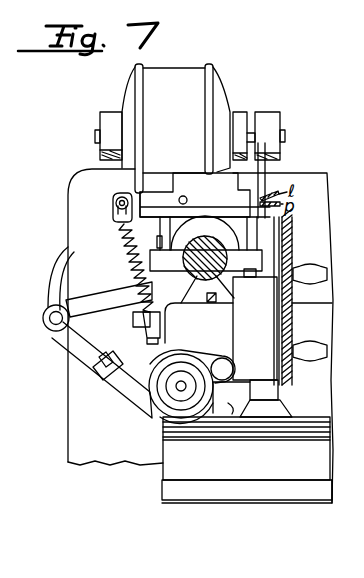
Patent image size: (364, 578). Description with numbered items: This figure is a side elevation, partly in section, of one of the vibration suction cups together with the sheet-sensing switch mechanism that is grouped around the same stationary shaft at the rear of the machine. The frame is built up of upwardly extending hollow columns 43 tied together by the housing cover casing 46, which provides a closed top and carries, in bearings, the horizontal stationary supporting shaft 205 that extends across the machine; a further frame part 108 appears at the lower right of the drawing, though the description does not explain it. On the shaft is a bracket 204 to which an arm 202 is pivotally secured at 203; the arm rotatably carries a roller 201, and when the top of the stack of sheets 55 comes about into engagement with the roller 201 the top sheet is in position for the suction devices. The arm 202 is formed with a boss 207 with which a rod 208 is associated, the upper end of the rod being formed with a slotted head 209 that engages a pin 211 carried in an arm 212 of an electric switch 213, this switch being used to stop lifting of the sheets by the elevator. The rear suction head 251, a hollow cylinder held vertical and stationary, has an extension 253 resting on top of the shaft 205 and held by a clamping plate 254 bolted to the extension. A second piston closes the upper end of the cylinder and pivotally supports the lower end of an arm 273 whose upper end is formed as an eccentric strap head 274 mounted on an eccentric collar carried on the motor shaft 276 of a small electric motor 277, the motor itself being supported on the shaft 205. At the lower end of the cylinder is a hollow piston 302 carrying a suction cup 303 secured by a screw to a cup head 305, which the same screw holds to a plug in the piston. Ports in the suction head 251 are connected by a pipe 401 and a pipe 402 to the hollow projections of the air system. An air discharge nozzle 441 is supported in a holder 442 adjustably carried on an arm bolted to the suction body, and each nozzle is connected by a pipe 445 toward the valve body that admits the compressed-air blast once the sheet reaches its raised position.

The hollow column 43 is at (115, 317).
The housing cover casing 46 is at (325, 205).
The stack of sheets 55 is at (283, 425).
The base frame 108 is at (358, 442).
The roller 201 is at (187, 412).
The arm 202 is at (166, 380).
The pivot 203 is at (52, 328).
The bracket 204 is at (109, 304).
The stationary supporting shaft 205 is at (224, 277).
The boss 207 is at (152, 322).
The rod 208 is at (128, 250).
The slotted head 209 is at (113, 208).
The pin 211 is at (121, 197).
The switch arm 212 is at (152, 193).
The electric switch 213 is at (195, 195).
The rear suction head 251 is at (255, 328).
The extension 253 is at (223, 246).
The clamping plate 254 is at (203, 290).
The arm 273 is at (267, 168).
The eccentric strap head 274 is at (266, 118).
The motor shaft 276 is at (287, 136).
The electric motor 277 is at (162, 128).
The hollow piston 302 is at (279, 390).
The suction cup 303 is at (231, 398).
The cup head 305 is at (283, 410).
The pipe 401 is at (318, 272).
The pipe 402 is at (318, 352).
The discharge nozzle 441 is at (135, 402).
The holder 442 is at (100, 378).
The pipe 445 is at (70, 348).